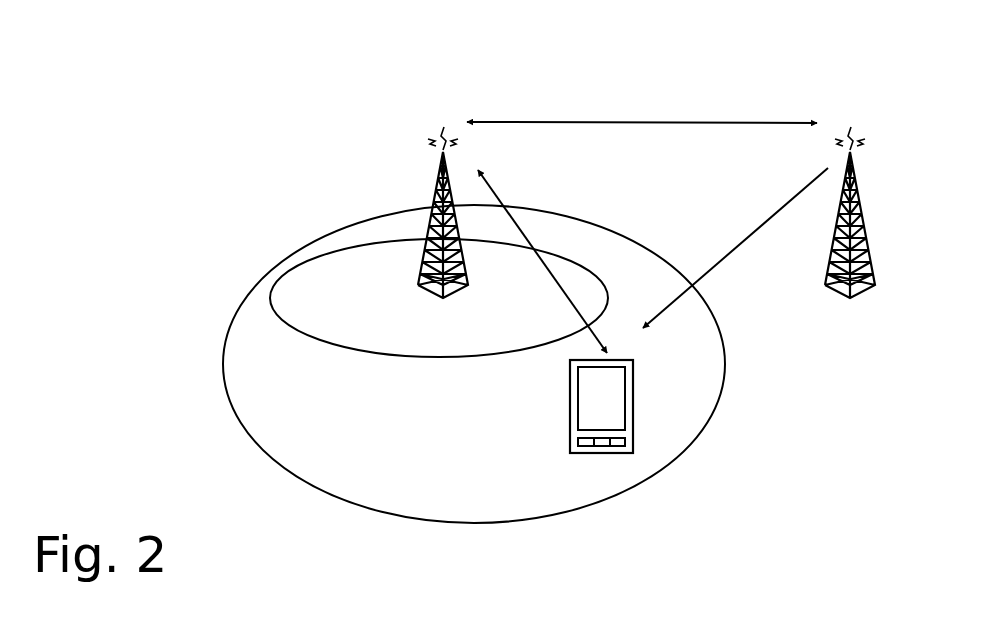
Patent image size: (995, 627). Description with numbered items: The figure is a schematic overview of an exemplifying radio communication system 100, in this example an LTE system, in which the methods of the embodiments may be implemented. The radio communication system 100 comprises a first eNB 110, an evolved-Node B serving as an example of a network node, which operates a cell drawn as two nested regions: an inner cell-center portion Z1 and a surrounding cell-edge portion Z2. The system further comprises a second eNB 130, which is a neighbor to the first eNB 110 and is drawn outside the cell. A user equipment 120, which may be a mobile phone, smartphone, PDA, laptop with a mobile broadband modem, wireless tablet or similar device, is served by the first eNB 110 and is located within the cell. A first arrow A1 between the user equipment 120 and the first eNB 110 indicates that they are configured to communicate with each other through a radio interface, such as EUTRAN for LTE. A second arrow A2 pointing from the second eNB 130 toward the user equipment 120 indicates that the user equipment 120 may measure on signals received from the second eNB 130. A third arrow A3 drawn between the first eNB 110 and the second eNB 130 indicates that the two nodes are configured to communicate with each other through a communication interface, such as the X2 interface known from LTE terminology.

The radio communication system 100 is at (252, 156).
The first eNB 110 is at (414, 213).
The user equipment 120 is at (601, 426).
The second eNB 130 is at (854, 237).
The cell-center portion Z1 is at (313, 325).
The cell-edge portion Z2 is at (285, 427).
The first arrow A1 is at (542, 250).
The second arrow A2 is at (735, 248).
The third arrow A3 is at (642, 98).